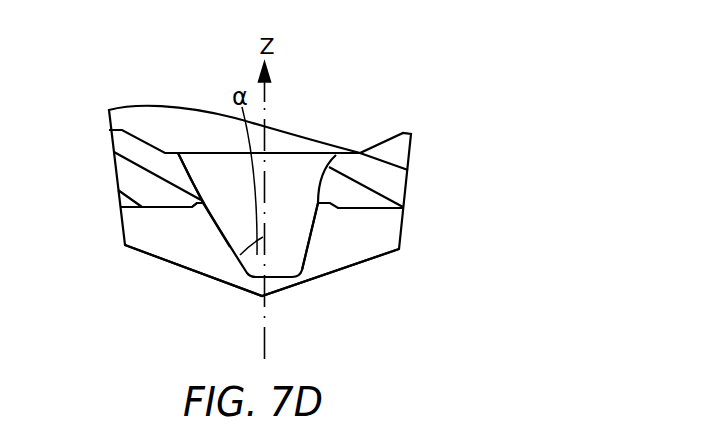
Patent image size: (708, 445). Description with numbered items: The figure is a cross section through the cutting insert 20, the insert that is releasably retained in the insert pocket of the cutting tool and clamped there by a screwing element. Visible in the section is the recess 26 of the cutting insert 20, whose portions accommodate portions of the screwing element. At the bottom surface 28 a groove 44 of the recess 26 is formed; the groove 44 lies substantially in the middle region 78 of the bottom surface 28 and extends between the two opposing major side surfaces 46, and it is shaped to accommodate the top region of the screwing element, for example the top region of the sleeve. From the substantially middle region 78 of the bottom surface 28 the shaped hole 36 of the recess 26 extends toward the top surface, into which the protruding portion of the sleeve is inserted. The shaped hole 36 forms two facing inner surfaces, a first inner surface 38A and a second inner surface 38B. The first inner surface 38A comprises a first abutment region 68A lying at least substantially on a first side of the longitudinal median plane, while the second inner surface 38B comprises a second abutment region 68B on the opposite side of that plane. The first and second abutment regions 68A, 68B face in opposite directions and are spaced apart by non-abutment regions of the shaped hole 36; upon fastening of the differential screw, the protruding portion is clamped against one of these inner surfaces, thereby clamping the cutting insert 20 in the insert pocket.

The cutting insert 20 is at (437, 128).
The recess 26 is at (290, 187).
The bottom surface 28 is at (189, 273).
The shaped hole 36 is at (259, 173).
The first inner surface 38A is at (318, 203).
The second inner surface 38B is at (204, 200).
The groove 44 is at (112, 225).
The major side surface 46 is at (407, 197).
The first abutment region 68A is at (336, 155).
The second abutment region 68B is at (204, 200).
The middle region 78 is at (228, 234).